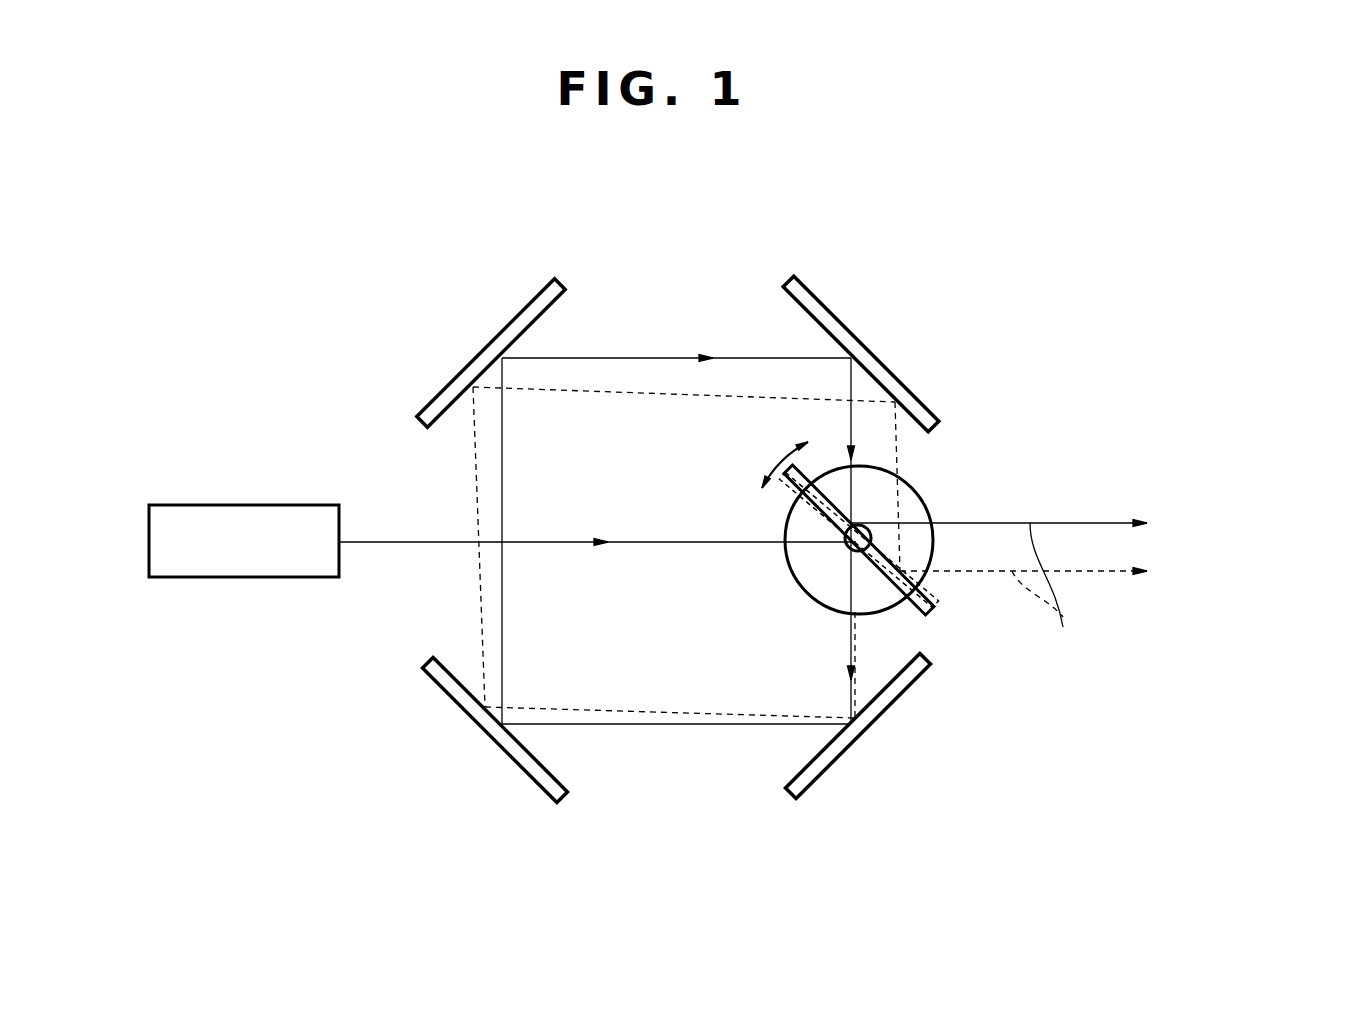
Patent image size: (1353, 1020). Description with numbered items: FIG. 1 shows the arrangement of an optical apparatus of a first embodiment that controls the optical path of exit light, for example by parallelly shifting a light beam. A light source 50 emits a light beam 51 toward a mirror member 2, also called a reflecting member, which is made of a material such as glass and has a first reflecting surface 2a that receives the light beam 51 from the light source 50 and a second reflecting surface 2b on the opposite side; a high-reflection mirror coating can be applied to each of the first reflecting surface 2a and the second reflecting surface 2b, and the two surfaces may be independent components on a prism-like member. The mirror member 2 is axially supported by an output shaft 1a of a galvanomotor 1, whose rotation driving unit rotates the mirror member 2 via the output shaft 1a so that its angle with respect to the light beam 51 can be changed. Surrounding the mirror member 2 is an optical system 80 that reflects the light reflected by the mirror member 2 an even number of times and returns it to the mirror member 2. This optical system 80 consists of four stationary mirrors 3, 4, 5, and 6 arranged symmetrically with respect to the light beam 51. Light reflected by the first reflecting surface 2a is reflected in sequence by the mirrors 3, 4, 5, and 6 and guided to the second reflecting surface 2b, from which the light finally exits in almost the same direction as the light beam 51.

The optical system 80 is at (822, 232).
The mirror 5 is at (511, 325).
The mirror 6 is at (841, 325).
The mirror 4 is at (511, 760).
The mirror 3 is at (843, 760).
The light source 50 is at (295, 505).
The light beam 51 is at (650, 544).
The galvanomotor 1 is at (912, 502).
The output shaft 1a is at (877, 530).
The mirror member 2 is at (936, 620).
The first reflecting surface 2a is at (790, 472).
The second reflecting surface 2b is at (930, 600).